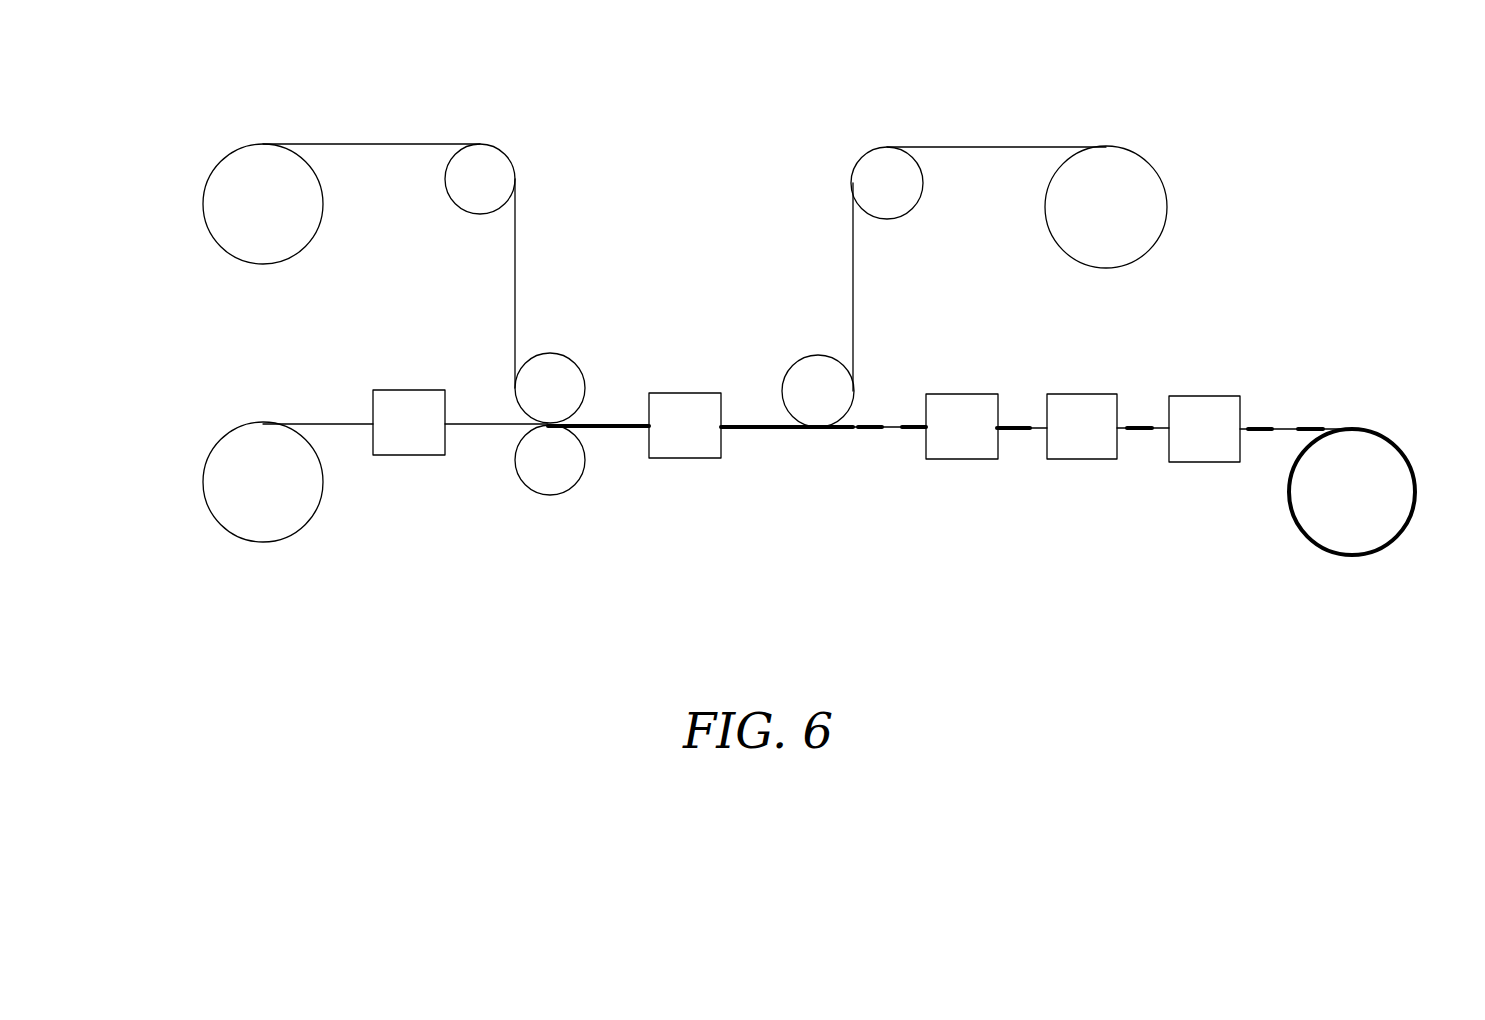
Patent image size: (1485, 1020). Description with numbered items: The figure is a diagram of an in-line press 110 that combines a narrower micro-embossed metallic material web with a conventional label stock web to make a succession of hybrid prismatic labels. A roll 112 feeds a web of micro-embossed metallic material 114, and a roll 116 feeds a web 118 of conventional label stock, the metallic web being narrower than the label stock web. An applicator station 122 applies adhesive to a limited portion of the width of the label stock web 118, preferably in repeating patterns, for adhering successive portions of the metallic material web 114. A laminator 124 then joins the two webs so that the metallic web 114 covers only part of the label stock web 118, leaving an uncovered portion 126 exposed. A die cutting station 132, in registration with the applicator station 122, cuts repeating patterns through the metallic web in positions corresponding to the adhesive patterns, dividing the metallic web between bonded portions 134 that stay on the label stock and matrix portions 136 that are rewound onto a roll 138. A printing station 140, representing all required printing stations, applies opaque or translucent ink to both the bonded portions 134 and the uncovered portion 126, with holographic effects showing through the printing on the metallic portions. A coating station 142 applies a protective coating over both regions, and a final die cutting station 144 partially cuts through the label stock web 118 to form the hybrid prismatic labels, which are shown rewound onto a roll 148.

The in-line press 110 is at (633, 128).
The roll 112 is at (232, 238).
The web of micro-embossed metallic material 114 is at (515, 242).
The roll 116 is at (245, 532).
The web of label stock 118 is at (323, 424).
The applicator station 122 is at (389, 437).
The laminator 124 is at (564, 365).
The uncovered portion 126 is at (1288, 430).
The die cutting station 132 is at (707, 438).
The bonded portions 134 is at (860, 427).
The matrix portions 136 is at (853, 290).
The roll 138 is at (1163, 230).
The printing station 140 is at (985, 439).
The coating station 142 is at (1105, 440).
The final die cutting station 144 is at (1204, 429).
The roll 148 is at (1407, 460).